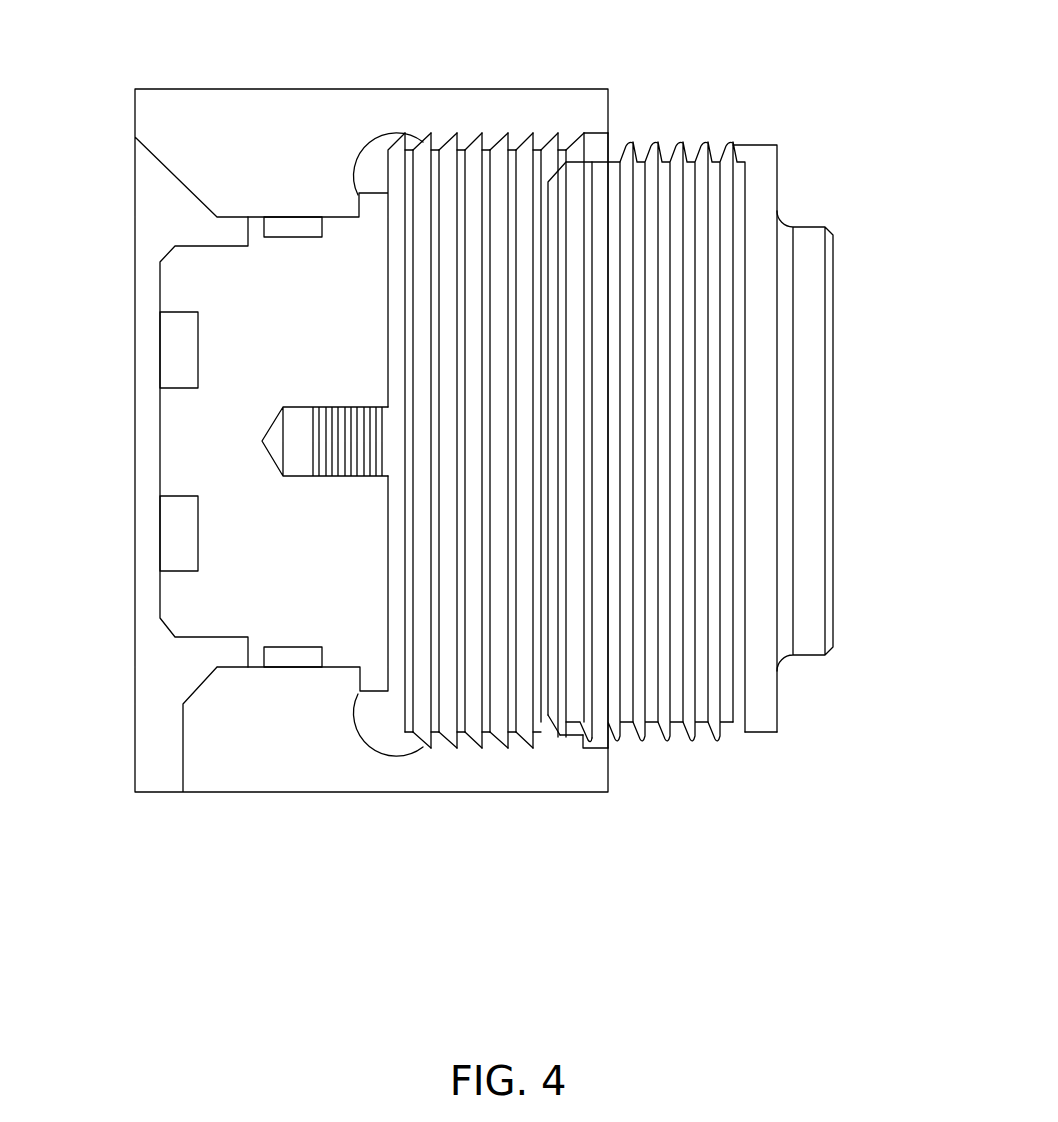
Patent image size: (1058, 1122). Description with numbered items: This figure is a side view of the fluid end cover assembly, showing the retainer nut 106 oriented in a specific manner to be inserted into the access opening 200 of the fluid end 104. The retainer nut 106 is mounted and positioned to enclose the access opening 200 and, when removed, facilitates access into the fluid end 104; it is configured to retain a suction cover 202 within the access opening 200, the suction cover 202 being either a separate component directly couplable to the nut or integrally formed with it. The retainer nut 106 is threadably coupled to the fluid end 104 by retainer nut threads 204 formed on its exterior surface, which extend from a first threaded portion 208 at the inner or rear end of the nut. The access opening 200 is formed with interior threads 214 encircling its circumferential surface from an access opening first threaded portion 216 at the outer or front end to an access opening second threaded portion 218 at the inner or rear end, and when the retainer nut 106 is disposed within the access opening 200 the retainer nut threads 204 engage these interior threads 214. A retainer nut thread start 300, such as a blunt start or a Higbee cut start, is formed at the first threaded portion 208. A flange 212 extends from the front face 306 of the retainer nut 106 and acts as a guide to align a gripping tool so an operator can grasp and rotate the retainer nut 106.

The fluid end 104 is at (170, 122).
The retainer nut 106 is at (752, 168).
The access opening 200 is at (380, 152).
The suction cover 202 is at (192, 452).
The retainer nut threads 204 is at (623, 148).
The first threaded portion 208 is at (549, 735).
The flange 212 is at (812, 543).
The interior threads 214 is at (440, 138).
The access opening first threaded portion 216 is at (577, 126).
The access opening second threaded portion 218 is at (394, 728).
The retainer nut thread start 300 is at (570, 735).
The front face 306 is at (777, 710).